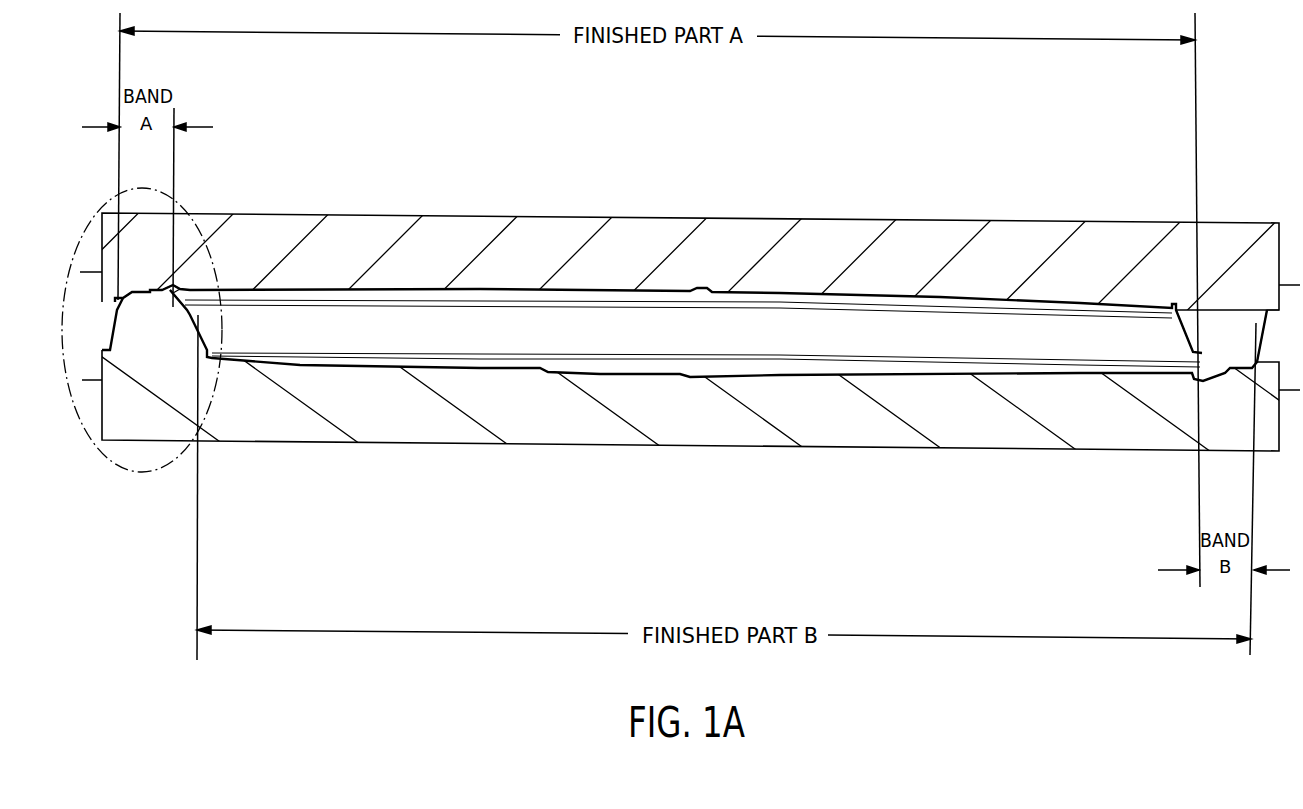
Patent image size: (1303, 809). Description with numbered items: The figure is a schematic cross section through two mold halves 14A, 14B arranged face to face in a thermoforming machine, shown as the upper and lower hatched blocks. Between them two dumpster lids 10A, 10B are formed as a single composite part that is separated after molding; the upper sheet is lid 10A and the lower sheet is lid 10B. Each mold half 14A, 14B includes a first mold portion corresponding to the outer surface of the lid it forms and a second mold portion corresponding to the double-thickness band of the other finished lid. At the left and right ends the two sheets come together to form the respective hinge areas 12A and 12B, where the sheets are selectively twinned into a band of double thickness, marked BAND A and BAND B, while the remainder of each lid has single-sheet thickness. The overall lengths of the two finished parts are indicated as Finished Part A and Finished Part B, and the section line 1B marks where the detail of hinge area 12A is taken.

The dumpster lid 10A is at (773, 290).
The dumpster lid 10B is at (620, 373).
The hinge area 12A is at (140, 270).
The hinge area 12B is at (1226, 343).
The mold half 14A is at (342, 230).
The mold half 14B is at (295, 428).
The section line 1B- 1B is at (163, 187).